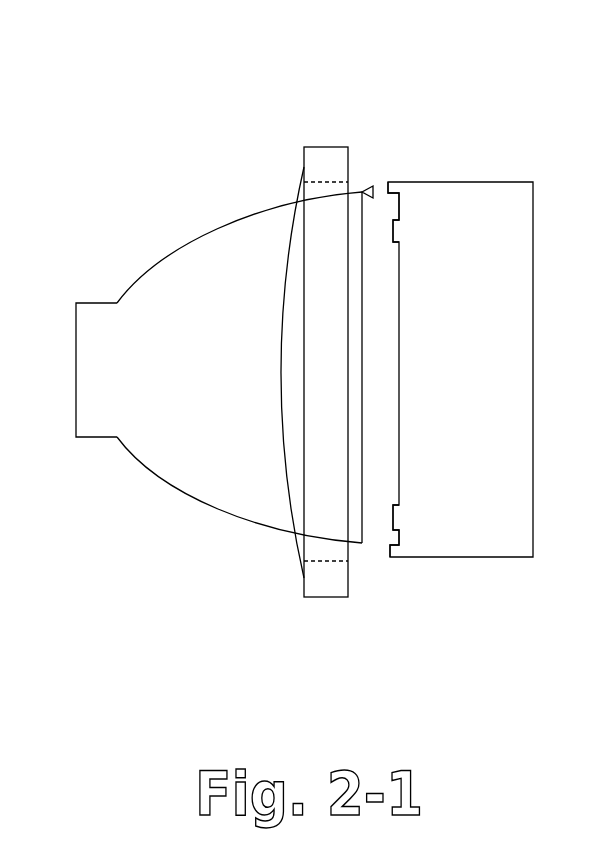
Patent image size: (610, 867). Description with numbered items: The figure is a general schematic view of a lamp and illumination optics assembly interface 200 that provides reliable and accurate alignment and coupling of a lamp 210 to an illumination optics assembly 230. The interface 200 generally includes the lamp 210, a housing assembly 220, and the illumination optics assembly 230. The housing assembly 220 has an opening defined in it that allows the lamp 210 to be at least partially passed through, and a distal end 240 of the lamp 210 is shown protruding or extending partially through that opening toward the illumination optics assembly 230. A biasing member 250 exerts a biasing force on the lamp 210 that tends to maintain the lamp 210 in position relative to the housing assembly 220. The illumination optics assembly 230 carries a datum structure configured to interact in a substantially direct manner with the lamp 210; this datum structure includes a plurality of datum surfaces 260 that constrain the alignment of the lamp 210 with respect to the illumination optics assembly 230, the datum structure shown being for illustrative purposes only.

The lamp and illumination optics assembly interface 200 is at (373, 88).
The lamp 210 is at (160, 257).
The housing assembly 220 is at (328, 598).
The illumination optics assembly 230 is at (480, 181).
The distal end 240 is at (373, 186).
The biasing member 250 is at (290, 492).
The datum surfaces 260 is at (388, 182).